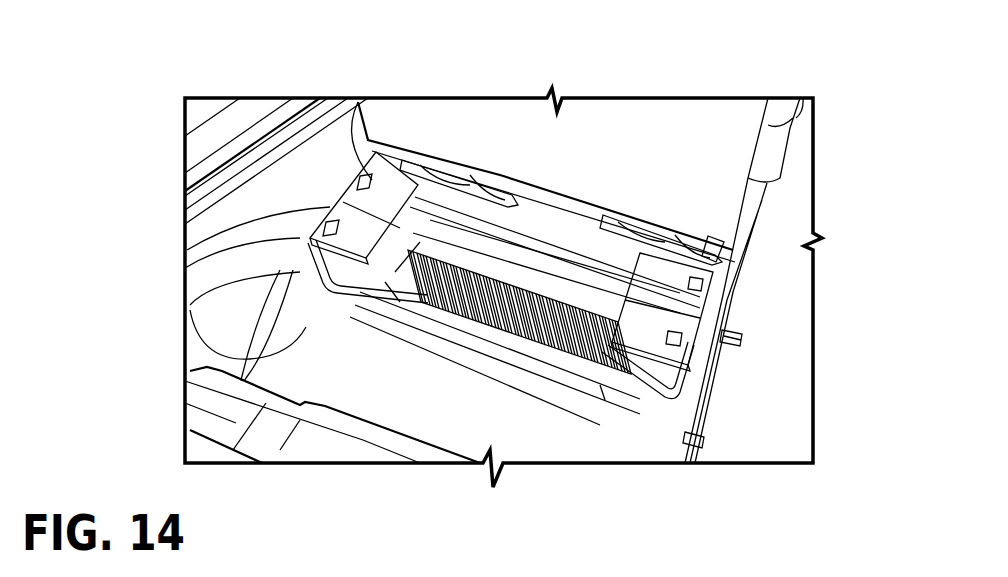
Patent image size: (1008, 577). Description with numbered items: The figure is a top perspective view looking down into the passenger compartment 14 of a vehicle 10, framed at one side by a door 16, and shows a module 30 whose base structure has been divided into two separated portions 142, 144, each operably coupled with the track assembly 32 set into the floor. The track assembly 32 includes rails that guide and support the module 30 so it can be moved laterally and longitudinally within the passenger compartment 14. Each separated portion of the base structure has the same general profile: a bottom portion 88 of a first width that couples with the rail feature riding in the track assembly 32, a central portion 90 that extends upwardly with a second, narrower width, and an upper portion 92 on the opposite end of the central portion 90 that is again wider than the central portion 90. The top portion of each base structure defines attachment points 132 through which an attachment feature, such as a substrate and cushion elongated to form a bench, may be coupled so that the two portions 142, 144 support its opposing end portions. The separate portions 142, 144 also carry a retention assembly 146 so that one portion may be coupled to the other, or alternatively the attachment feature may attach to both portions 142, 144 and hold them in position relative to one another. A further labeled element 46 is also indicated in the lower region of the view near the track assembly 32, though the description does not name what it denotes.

The vehicle 10 is at (741, 81).
The passenger compartment 14 is at (226, 196).
The door 16 is at (299, 196).
The module 30 is at (693, 303).
The track assembly 32 is at (720, 362).
The lower panel 46 is at (617, 393).
The bottom portion 88 is at (368, 326).
The central portion 90 is at (308, 271).
The upper portion 92 is at (657, 287).
The attachment point 132 is at (369, 176).
The first portion of the base structure 142 is at (333, 305).
The second portion of the base structure 144 is at (738, 338).
The retention assembly 146 is at (409, 262).